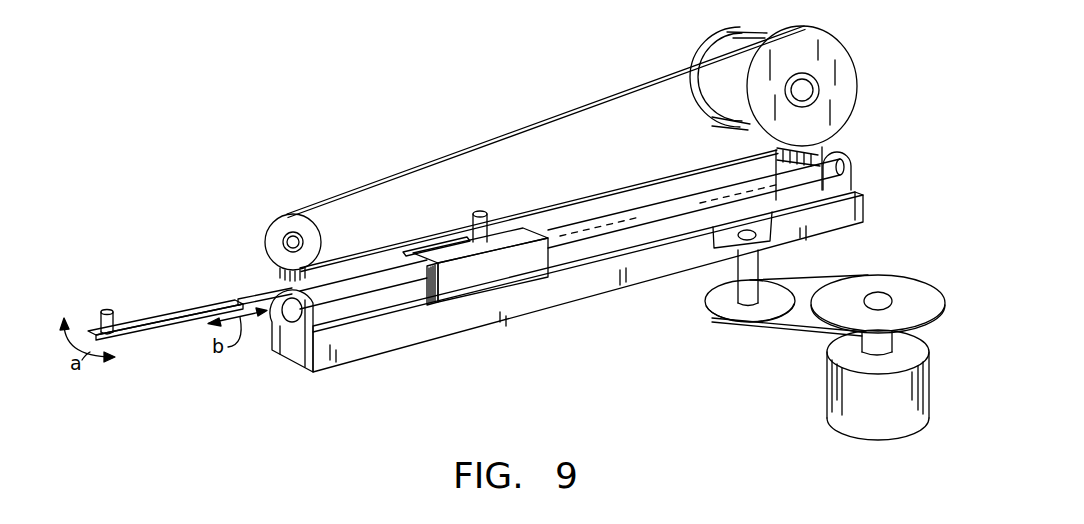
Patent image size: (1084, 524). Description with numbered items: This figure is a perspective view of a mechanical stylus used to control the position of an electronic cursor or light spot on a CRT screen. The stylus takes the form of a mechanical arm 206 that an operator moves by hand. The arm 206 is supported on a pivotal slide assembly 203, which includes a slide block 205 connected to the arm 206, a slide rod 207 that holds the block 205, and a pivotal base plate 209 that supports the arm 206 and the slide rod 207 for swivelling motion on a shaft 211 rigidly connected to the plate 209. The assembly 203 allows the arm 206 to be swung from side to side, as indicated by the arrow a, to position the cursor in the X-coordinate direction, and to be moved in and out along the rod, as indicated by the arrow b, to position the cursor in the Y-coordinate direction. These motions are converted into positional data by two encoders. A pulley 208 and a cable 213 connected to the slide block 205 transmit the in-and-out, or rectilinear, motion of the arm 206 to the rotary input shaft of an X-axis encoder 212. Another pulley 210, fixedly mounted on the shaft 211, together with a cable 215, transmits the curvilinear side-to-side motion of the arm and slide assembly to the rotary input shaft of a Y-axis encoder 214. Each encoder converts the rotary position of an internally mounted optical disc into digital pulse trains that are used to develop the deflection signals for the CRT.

The pivotal slide assembly 203 is at (375, 362).
The slide block 205 is at (482, 272).
The mechanical arm 206 is at (197, 312).
The slide rod 207 is at (855, 176).
The pulley 208 is at (300, 214).
The pivotal base plate 209 is at (315, 372).
The pulley 210 is at (725, 308).
The shaft 211 is at (753, 276).
The X-axis encoder 212 is at (722, 32).
The cable 213 is at (566, 108).
The Y-axis encoder 214 is at (847, 396).
The cable 215 is at (805, 328).